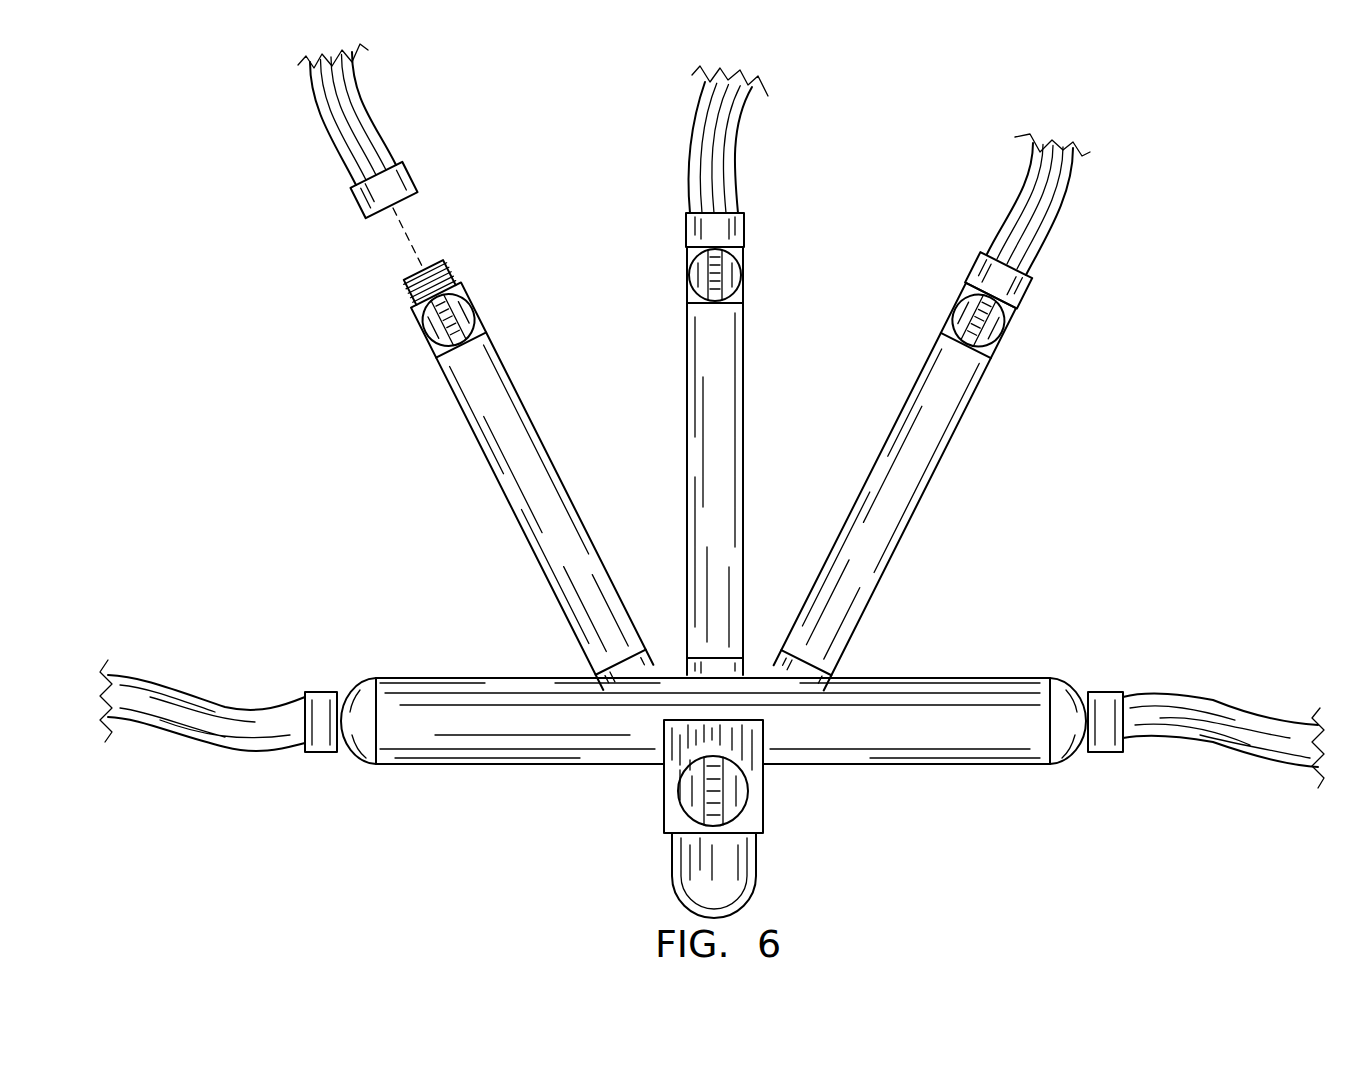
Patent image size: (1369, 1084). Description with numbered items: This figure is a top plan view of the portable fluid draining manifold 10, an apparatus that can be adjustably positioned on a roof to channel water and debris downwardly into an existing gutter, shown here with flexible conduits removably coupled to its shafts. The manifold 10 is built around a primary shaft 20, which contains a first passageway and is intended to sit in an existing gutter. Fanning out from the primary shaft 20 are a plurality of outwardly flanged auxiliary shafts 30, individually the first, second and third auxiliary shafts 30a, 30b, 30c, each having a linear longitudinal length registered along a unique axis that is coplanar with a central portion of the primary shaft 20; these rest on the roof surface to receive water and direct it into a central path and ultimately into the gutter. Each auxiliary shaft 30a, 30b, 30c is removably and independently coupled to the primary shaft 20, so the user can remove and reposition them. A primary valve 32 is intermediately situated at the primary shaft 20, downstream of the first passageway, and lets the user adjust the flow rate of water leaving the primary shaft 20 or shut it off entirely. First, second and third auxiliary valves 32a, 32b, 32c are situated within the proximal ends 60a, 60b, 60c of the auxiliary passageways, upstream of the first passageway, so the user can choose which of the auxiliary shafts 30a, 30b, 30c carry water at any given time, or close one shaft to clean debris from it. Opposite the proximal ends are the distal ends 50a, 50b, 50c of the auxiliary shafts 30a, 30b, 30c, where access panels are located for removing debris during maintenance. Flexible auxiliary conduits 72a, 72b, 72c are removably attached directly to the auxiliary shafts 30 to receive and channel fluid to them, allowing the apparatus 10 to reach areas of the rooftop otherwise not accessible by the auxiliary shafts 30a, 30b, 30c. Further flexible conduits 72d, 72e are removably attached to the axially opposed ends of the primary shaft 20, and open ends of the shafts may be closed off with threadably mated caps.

The portable fluid draining manifold 10 is at (163, 207).
The primary shaft 20 is at (985, 740).
The auxiliary shafts 30 is at (576, 378).
The first auxiliary shaft 30a is at (482, 402).
The second auxiliary shaft 30b is at (722, 367).
The third auxiliary shaft 30c is at (930, 410).
The primary valve 32 is at (700, 790).
The first auxiliary valve 32a is at (440, 350).
The second auxiliary valve 32b is at (722, 268).
The third auxiliary valve 32c is at (955, 315).
The distal end of first auxiliary shaft 50a is at (415, 318).
The distal end of second auxiliary shaft 50b is at (690, 255).
The distal end of third auxiliary shaft 50c is at (1012, 310).
The proximal end of first auxiliary shaft 60a is at (603, 673).
The proximal end of second auxiliary shaft 60b is at (718, 643).
The proximal end of third auxiliary shaft 60c is at (843, 655).
The first flexible auxiliary conduit 72a is at (355, 137).
The second flexible auxiliary conduit 72b is at (705, 147).
The third flexible auxiliary conduit 72c is at (1045, 210).
The flexible conduit 72d is at (173, 705).
The flexible conduit 72e is at (1217, 720).